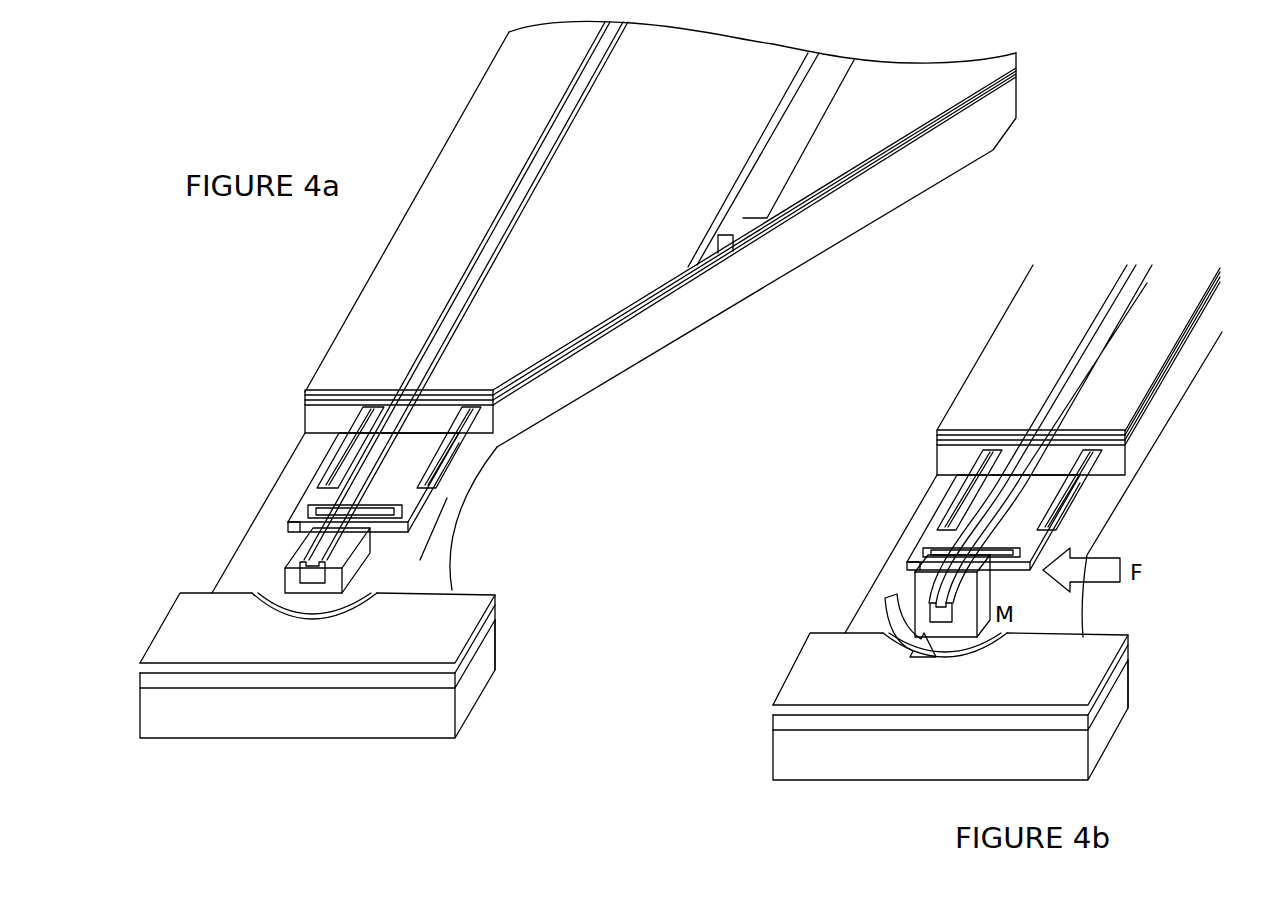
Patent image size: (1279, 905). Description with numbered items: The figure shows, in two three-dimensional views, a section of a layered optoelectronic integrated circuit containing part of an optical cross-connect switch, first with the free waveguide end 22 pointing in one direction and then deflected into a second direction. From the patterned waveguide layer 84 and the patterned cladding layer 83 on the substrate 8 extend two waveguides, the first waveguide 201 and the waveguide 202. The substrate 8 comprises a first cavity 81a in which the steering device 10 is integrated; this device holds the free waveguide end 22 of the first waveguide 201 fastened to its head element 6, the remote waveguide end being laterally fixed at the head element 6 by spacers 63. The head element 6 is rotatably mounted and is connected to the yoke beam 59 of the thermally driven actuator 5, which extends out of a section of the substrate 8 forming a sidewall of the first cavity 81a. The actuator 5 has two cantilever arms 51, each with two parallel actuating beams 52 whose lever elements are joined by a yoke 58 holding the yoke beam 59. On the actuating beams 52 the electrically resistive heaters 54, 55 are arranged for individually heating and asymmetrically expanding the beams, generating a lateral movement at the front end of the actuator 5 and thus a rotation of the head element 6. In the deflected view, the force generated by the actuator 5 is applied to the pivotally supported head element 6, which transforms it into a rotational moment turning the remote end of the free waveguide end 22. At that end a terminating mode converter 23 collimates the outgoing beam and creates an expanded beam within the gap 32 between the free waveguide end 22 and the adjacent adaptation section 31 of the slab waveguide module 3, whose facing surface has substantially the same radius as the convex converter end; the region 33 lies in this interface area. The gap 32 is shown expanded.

In FIG. 4A, the steering device 10 is at (187, 470).
In FIG. 4B, the steering device 10 is at (1192, 608).
In FIG. 4A, the substrate 8 is at (547, 392).
In FIG. 4B, the substrate 8 is at (775, 752).
In FIG. 4A, the patterned cladding layer 83 is at (627, 322).
In FIG. 4B, the patterned cladding layer 83 is at (800, 668).
In FIG. 4A, the patterned waveguide layer 84 is at (587, 350).
In FIG. 4A, the electrically resistive heater 54 is at (312, 393).
In FIG. 4A, the electrically resistive heater 55 is at (312, 400).
In FIG. 4A, the waveguide 202 is at (733, 252).
In FIG. 4A, the free waveguide end 22 is at (420, 500).
In FIG. 4B, the free waveguide end 22 is at (975, 462).
In FIG. 4A, the cantilever arm 51 is at (345, 450).
In FIG. 4B, the cantilever arm 51 is at (955, 500).
In FIG. 4A, the actuation beam 52 is at (380, 470).
In FIG. 4A, the actuator 5 is at (282, 481).
In FIG. 4B, the actuator 5 is at (897, 538).
In FIG. 4A, the terminating mode converter 23 is at (410, 532).
In FIG. 4A, the yoke beam 59 is at (287, 527).
In FIG. 4B, the yoke beam 59 is at (1000, 575).
In FIG. 4A, the yoke 58 is at (405, 512).
In FIG. 4B, the yoke 58 is at (1005, 538).
In FIG. 4A, the first cavity 81a is at (380, 547).
In FIG. 4A, the spacer 63 is at (380, 570).
In FIG. 4A, the head element 6 is at (282, 546).
In FIG. 4B, the head element 6 is at (895, 585).
In FIG. 4A, the gap 32 is at (290, 580).
In FIG. 4B, the gap 32 is at (890, 620).
In FIG. 4A, the first waveguide 201 is at (313, 583).
In FIG. 4B, the first waveguide 201 is at (1010, 450).
In FIG. 4A, the adaptation section 31 is at (243, 600).
In FIG. 4B, the adaptation section 31 is at (875, 640).
In FIG. 4A, the trough 33 is at (213, 592).
In FIG. 4A, the slab waveguide module 3 is at (147, 683).
In FIG. 4B, the slab waveguide module 3 is at (785, 717).